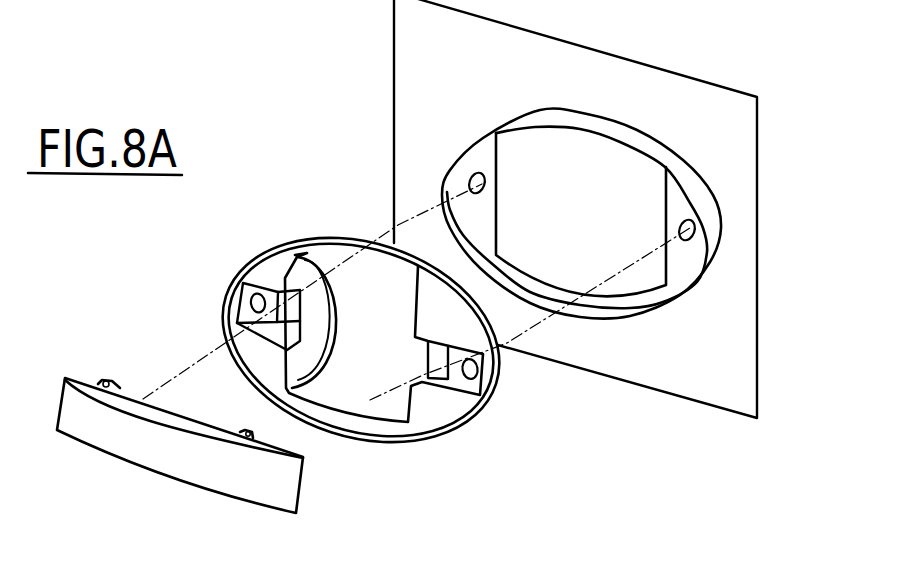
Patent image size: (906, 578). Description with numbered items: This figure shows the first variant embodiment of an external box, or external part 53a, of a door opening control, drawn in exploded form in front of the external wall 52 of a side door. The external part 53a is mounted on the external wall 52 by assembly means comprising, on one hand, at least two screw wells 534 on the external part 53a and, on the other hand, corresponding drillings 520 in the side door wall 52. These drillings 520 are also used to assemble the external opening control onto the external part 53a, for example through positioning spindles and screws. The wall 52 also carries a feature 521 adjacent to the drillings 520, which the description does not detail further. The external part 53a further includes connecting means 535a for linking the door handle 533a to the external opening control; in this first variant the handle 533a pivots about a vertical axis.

The external wall 52 is at (410, 65).
The drillings 520 is at (692, 240).
The window opening 521 is at (588, 133).
The external part 53a is at (228, 298).
The screw wells 534 is at (492, 383).
The connecting means 535a is at (293, 307).
The door handle 533a is at (197, 474).